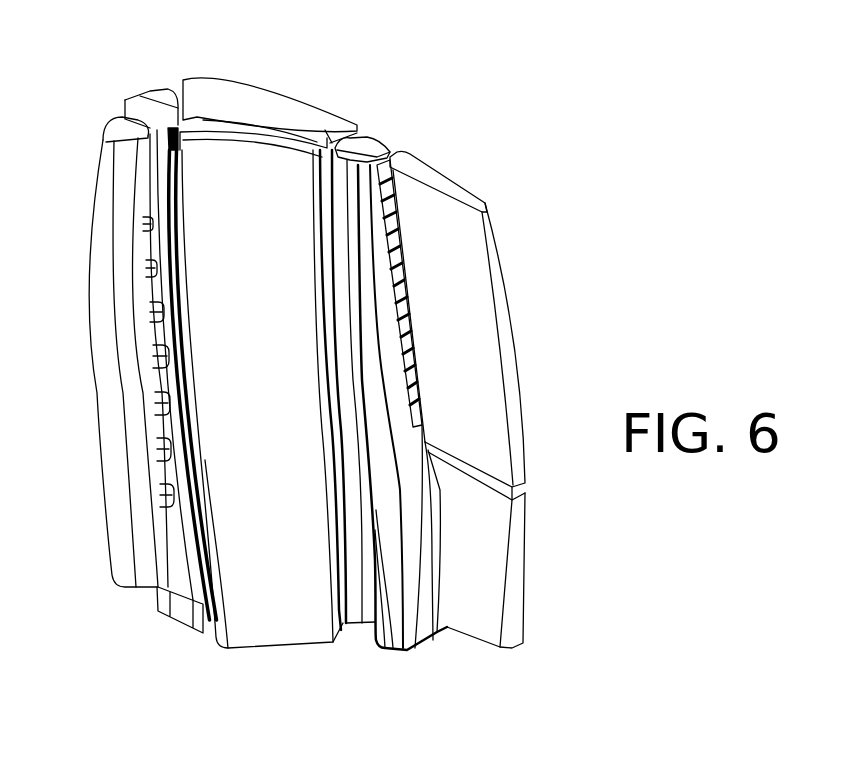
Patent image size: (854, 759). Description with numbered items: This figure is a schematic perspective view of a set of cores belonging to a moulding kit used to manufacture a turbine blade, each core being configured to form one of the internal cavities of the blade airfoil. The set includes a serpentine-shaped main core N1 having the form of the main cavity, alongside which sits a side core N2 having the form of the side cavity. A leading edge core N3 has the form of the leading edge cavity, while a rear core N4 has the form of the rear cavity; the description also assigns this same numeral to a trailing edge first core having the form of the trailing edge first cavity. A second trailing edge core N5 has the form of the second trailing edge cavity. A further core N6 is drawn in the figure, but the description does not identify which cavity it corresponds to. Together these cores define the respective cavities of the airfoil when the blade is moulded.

The serpentine-shaped main core N1 is at (260, 102).
The side core N2 is at (292, 578).
The leading edge core N3 is at (132, 442).
The rear core N4 is at (400, 578).
The second trailing edge core N5 is at (447, 267).
The lower plate N6 is at (477, 528).